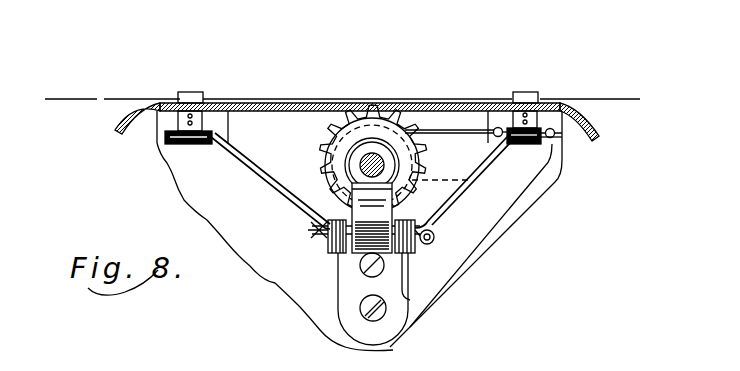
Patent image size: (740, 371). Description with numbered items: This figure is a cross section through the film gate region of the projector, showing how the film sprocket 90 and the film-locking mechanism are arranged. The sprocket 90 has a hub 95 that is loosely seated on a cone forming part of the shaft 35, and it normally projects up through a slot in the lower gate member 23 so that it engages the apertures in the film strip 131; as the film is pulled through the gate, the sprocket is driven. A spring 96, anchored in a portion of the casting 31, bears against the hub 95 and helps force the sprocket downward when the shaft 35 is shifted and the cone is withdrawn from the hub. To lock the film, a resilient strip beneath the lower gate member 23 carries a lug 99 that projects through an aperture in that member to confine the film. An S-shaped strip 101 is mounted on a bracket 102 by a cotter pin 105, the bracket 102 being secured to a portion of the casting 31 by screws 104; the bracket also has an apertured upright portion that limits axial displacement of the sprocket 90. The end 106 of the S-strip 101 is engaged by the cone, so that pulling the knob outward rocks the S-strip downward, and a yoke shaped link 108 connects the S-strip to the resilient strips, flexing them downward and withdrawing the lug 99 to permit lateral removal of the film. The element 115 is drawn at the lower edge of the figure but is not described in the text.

The panel edge line 131 is at (118, 79).
The curved support bar 23 is at (600, 131).
The clamp bracket 99 is at (195, 95).
The triangular frame plate 31 is at (557, 140).
The ratchet gear 90 is at (322, 152).
The shaft and clamp block 35 is at (376, 160).
The link rod 96 is at (462, 134).
The pivot axis line 95 is at (450, 181).
The right brace rod 108 is at (443, 203).
The left brace rod 106 is at (337, 197).
The eye bolt 105 is at (435, 246).
The hanger plate 104 is at (360, 285).
The upper screw 101 is at (358, 258).
The hanger flange 102 is at (407, 273).
The lower member 115 is at (234, 368).